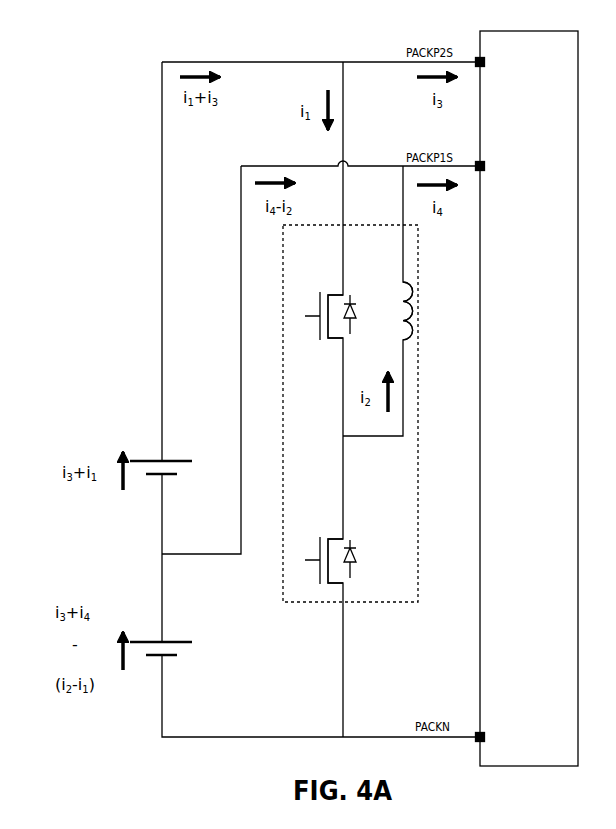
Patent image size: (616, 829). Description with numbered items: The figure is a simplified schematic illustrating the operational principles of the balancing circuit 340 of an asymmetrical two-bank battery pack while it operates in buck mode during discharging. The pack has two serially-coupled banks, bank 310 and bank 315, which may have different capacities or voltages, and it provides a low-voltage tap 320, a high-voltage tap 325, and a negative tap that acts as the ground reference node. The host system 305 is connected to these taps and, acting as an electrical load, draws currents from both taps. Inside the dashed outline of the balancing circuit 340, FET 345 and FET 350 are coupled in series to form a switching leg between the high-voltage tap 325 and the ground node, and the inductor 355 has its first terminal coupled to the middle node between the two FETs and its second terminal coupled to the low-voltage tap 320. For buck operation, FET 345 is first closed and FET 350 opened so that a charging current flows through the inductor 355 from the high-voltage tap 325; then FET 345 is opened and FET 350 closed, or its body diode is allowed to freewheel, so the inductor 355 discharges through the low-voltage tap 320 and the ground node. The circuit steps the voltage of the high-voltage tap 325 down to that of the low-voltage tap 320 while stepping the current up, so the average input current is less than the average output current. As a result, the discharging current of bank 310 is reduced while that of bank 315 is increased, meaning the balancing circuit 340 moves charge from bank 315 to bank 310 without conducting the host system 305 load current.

The host system 305 is at (541, 420).
The bank 310 is at (177, 635).
The bank 315 is at (177, 454).
The low-voltage tap 320 is at (303, 161).
The high-voltage tap 325 is at (303, 57).
The balancing circuit 340 is at (316, 606).
The field-effect transistor 345 is at (337, 289).
The field-effect transistor 350 is at (337, 532).
The inductor 355 is at (402, 289).